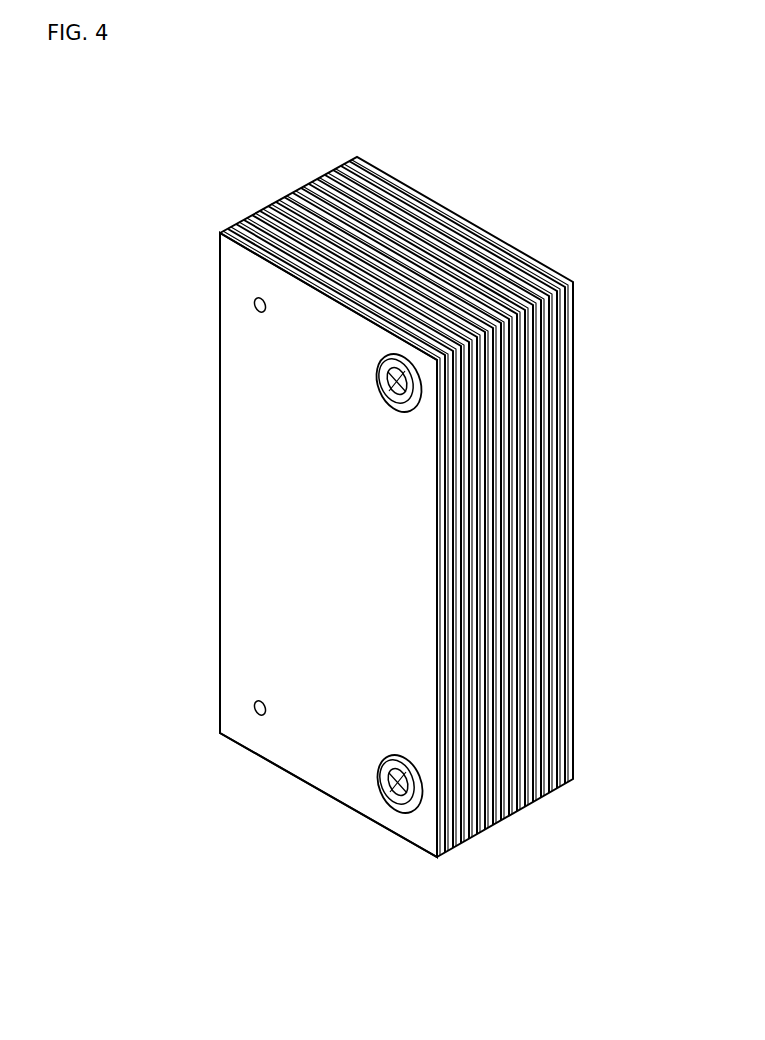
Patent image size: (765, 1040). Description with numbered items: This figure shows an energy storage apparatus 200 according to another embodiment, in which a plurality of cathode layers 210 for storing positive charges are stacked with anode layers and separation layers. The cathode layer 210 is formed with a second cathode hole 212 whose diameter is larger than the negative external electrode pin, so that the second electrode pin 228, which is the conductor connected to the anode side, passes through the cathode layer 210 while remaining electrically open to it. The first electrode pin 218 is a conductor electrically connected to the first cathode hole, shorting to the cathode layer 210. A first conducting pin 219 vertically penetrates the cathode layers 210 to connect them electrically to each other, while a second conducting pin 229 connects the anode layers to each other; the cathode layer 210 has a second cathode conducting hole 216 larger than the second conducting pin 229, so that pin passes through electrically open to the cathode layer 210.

The energy storage apparatus 200 is at (88, 128).
The cathode layer 210 is at (236, 262).
The second cathode hole 212 is at (417, 405).
The second cathode conducting hole 216 is at (417, 808).
The first electrode pin 218 is at (255, 306).
The first conducting pin 219 is at (255, 709).
The second electrode pin 228 is at (380, 386).
The second conducting pin 229 is at (385, 790).